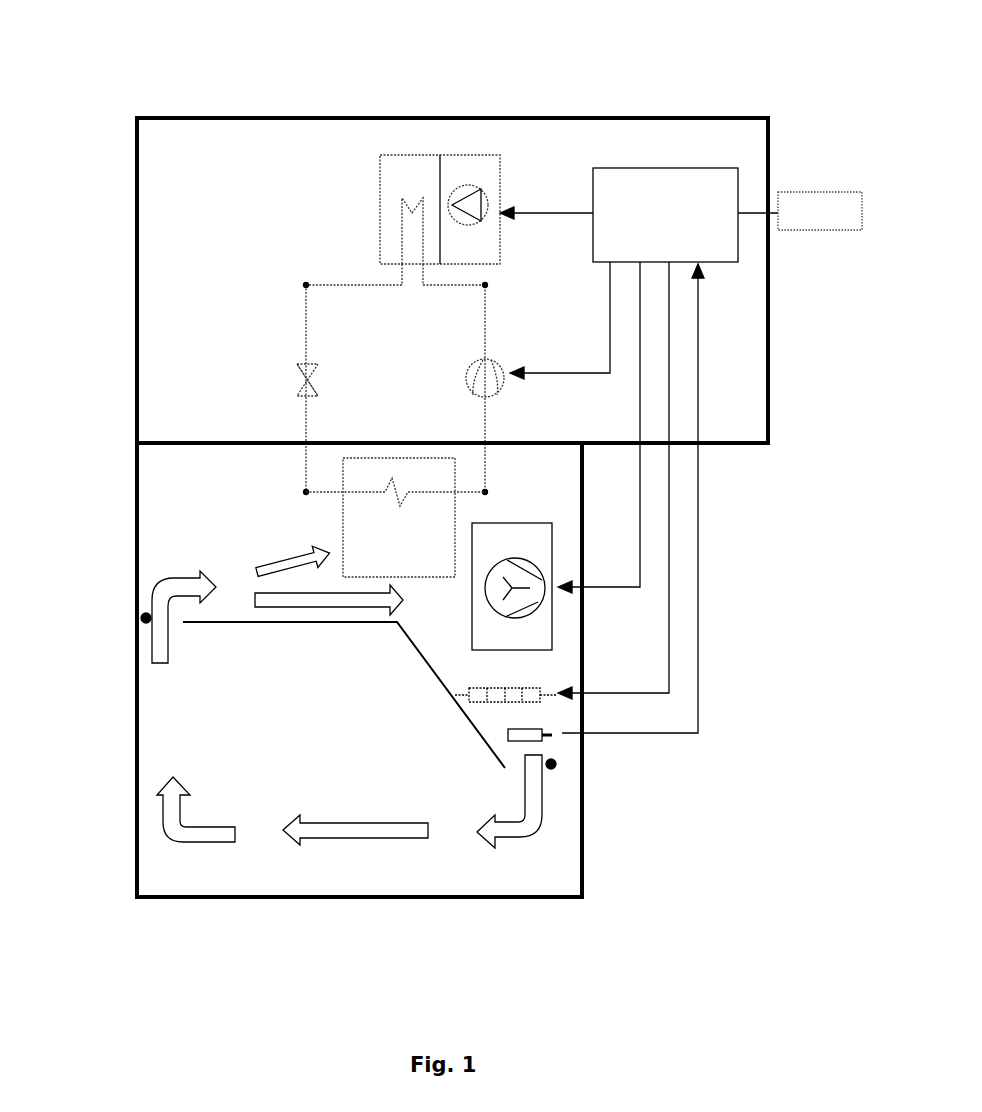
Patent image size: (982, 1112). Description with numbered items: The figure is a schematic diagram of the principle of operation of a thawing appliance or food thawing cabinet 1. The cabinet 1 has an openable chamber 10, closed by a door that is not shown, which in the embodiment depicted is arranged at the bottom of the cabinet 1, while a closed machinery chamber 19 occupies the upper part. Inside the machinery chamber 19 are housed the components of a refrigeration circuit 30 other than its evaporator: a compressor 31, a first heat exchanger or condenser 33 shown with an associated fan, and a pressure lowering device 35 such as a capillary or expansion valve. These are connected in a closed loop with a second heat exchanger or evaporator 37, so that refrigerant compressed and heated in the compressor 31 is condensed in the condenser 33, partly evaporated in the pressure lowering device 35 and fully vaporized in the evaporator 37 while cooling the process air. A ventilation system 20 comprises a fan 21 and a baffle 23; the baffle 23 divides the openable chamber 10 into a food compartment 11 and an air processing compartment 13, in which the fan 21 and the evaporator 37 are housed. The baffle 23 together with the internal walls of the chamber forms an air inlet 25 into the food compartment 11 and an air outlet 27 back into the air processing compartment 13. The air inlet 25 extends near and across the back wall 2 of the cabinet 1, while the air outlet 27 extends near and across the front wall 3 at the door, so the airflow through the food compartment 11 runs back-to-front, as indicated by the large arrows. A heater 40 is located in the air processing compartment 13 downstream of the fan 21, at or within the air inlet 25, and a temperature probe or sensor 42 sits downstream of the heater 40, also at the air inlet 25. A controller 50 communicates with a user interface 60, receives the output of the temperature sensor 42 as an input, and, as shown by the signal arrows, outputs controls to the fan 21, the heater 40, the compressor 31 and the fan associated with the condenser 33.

The thawing appliance / food thawing cabinet 1 is at (745, 795).
The back wall 2 is at (583, 866).
The front wall 3 is at (137, 823).
The chamber 10 is at (137, 585).
The food compartment 11 is at (165, 734).
The air processing compartment 13 is at (165, 514).
The machinery chamber 19 is at (768, 131).
The ventilation system 20 is at (622, 650).
The fan 21 is at (542, 542).
The baffle 23 is at (297, 625).
The air inlet 25 is at (551, 764).
The air outlet 27 is at (145, 622).
The refrigeration circuit 30 is at (194, 133).
The compressor 31 is at (485, 358).
The first heat exchanger (condenser) 33 is at (500, 178).
The pressure lowering device 35 is at (296, 375).
The second heat exchanger (evaporator) 37 is at (394, 460).
The heater 40 is at (468, 700).
The temperature probe or sensor 42 is at (508, 735).
The controller 50 is at (618, 166).
The user interface 60 is at (800, 232).